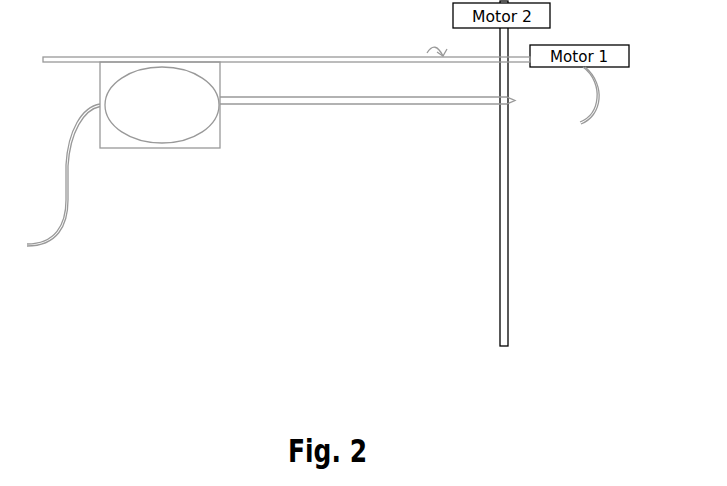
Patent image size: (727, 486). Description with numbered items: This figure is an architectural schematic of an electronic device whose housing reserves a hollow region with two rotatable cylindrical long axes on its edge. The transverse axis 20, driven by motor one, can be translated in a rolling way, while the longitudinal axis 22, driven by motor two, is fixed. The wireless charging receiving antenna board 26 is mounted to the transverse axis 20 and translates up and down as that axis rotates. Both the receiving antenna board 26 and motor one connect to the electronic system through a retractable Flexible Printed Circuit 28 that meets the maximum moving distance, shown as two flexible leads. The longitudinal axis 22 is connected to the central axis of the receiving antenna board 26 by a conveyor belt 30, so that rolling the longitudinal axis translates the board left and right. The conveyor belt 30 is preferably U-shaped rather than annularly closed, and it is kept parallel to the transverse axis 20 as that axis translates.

The transverse axis 20 is at (286, 38).
The longitudinal axis 22 is at (451, 173).
The receiving antenna board 26 is at (160, 105).
The Flexible Printed Circuit 28 is at (313, 156).
The conveyor belt 30 is at (367, 116).